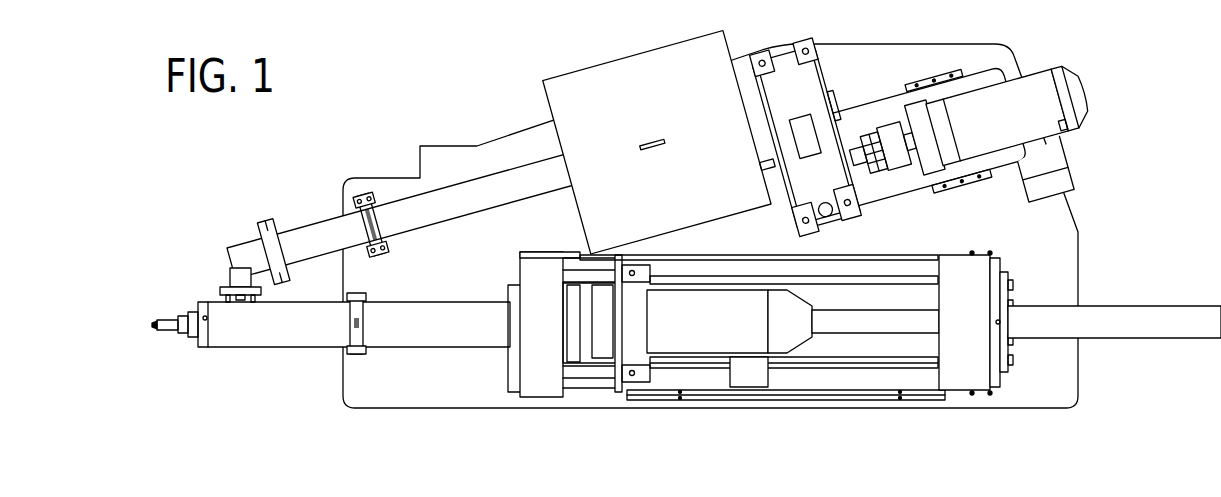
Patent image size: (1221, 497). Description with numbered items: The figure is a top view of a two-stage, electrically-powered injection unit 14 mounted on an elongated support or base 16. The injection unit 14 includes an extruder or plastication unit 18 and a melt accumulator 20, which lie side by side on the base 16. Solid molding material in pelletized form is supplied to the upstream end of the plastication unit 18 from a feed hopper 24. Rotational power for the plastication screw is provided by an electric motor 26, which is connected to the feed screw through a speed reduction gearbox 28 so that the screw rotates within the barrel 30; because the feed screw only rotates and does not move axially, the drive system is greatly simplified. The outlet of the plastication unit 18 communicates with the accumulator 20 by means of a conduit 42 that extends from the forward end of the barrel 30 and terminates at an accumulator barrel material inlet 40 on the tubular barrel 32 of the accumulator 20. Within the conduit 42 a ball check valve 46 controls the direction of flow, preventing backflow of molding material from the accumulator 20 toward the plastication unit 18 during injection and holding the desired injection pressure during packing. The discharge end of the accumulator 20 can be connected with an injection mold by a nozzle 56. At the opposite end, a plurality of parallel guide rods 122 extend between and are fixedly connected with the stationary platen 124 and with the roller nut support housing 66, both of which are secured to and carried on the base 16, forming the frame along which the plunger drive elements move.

The two-stage injection unit 14 is at (686, 231).
The base 16 is at (1050, 395).
The plastication unit 18 is at (892, 42).
The melt accumulator 20 is at (686, 343).
The feed hopper 24 is at (651, 116).
The electric motor 26 is at (1025, 98).
The speed reduction gearbox 28 is at (785, 60).
The barrel 30 is at (325, 232).
The tubular barrel 32 is at (275, 340).
The accumulator barrel material inlet 40 is at (243, 302).
The conduit 42 is at (243, 250).
The ball check valve 46 is at (237, 280).
The nozzle 56 is at (170, 328).
The support housing 66 is at (976, 270).
The guide rods 122 is at (798, 380).
The stationary platen 124 is at (535, 388).